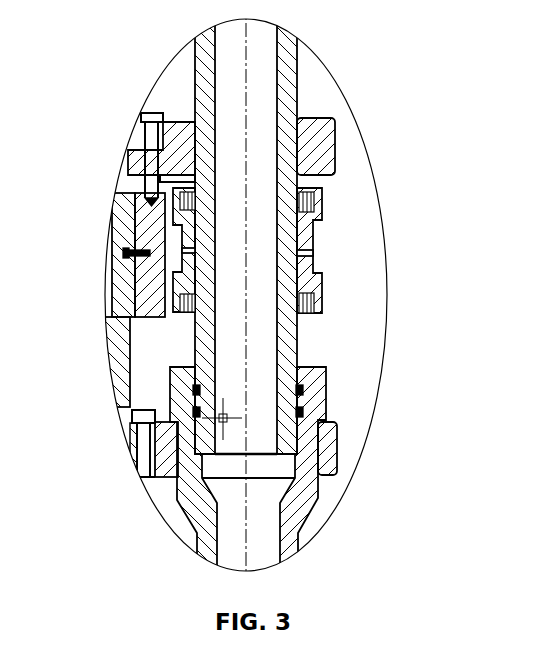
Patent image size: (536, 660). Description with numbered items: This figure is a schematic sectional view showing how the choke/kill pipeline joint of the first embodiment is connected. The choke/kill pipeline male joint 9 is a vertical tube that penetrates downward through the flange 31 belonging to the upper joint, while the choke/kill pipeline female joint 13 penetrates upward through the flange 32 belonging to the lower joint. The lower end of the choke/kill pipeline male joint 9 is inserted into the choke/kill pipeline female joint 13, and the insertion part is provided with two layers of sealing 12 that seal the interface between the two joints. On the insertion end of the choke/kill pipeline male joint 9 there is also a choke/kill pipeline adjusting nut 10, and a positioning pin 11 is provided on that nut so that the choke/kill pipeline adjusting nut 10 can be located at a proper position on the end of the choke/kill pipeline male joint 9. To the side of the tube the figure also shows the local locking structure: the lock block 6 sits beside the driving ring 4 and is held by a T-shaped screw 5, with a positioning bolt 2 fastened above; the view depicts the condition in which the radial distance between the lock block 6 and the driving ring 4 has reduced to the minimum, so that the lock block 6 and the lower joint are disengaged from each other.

The positioning bolt 2 is at (140, 141).
The driving ring 4 is at (118, 342).
The T-shaped screw 5 is at (123, 253).
The lock block 6 is at (120, 295).
The choke/kill pipeline male joint 9 is at (287, 142).
The choke/kill pipeline adjusting nut 10 is at (300, 221).
The positioning pin 11 is at (299, 256).
The sealing 12 is at (300, 390).
The choke/kill pipeline female joint 13 is at (305, 455).
The flange 31 is at (330, 127).
The flange 32 is at (333, 438).